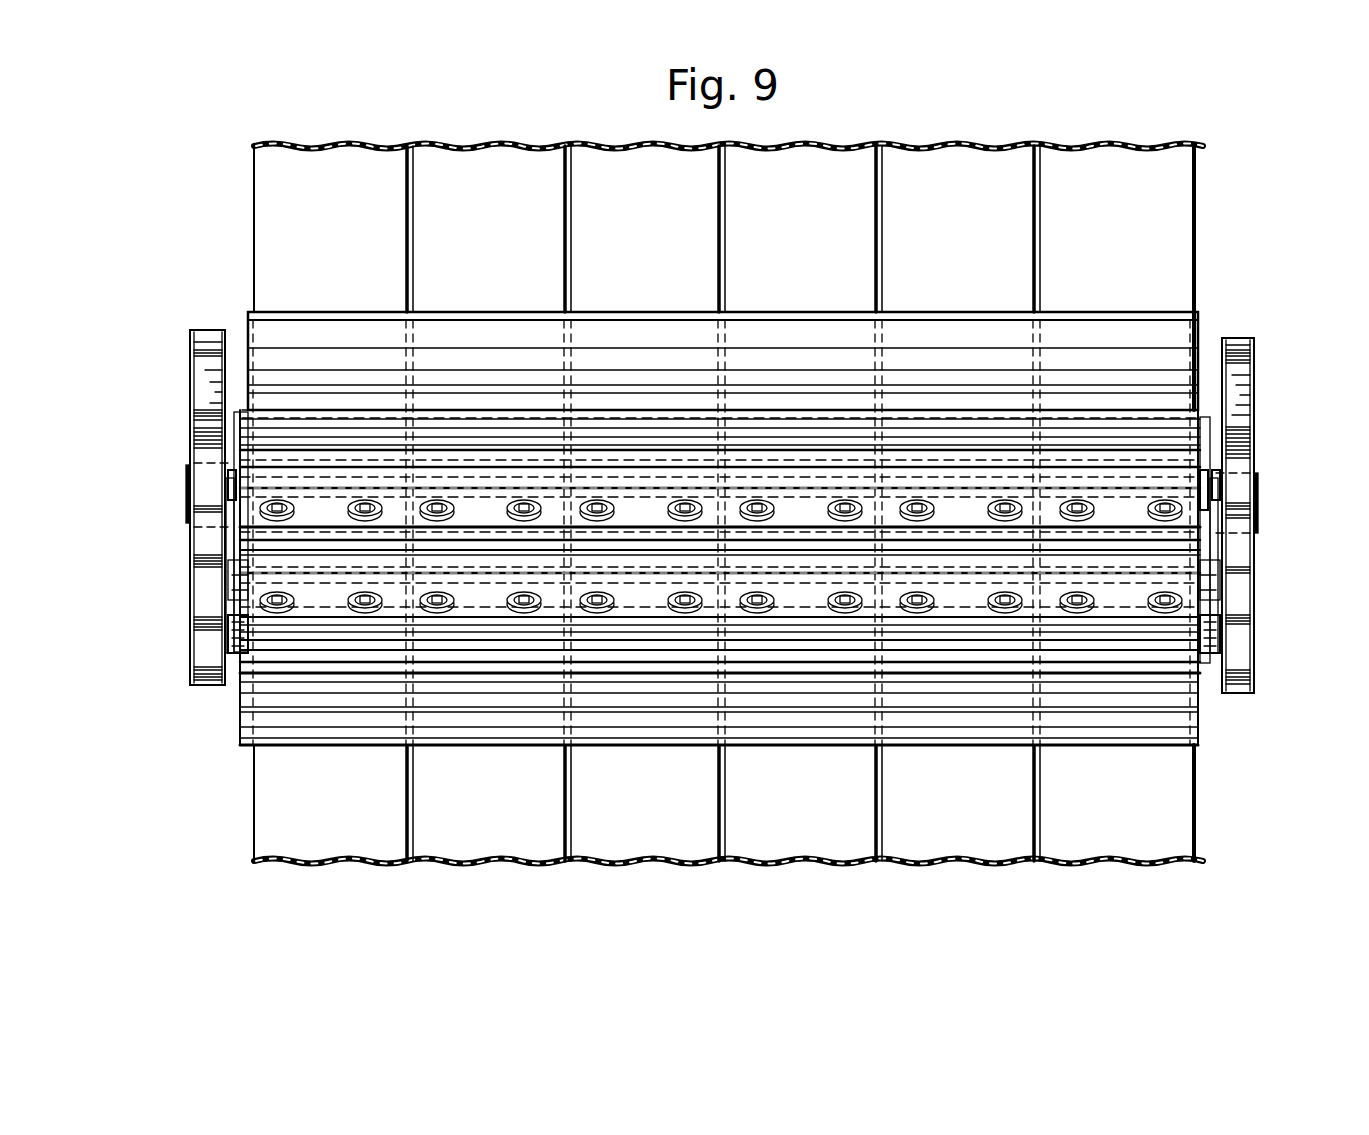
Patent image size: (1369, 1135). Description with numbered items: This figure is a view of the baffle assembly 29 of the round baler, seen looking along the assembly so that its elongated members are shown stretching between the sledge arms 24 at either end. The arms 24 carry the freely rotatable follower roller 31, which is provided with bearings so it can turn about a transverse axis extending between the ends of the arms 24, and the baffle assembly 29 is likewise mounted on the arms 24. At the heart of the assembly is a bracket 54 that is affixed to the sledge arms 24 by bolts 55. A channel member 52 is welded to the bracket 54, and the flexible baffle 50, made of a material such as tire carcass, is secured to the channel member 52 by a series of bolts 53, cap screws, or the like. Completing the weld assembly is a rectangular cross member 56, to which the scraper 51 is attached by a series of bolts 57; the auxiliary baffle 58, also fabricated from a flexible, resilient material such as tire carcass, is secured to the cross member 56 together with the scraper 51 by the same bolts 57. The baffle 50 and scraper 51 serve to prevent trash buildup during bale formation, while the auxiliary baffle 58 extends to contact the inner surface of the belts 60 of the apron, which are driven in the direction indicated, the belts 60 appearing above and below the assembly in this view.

The arms 24 is at (192, 437).
The baffle assembly 29 is at (1232, 767).
The follower roller 31 is at (1206, 416).
The baffle 50 is at (335, 750).
The scraper 51 is at (1140, 555).
The channel member 52 is at (1213, 632).
The bolts 53 is at (437, 612).
The bracket 54 is at (1212, 522).
The bolts 55 is at (1212, 556).
The rectangular cross member 56 is at (1213, 578).
The bolts 57 is at (437, 500).
The auxiliary baffle 58 is at (320, 311).
The belts 60 is at (465, 144).